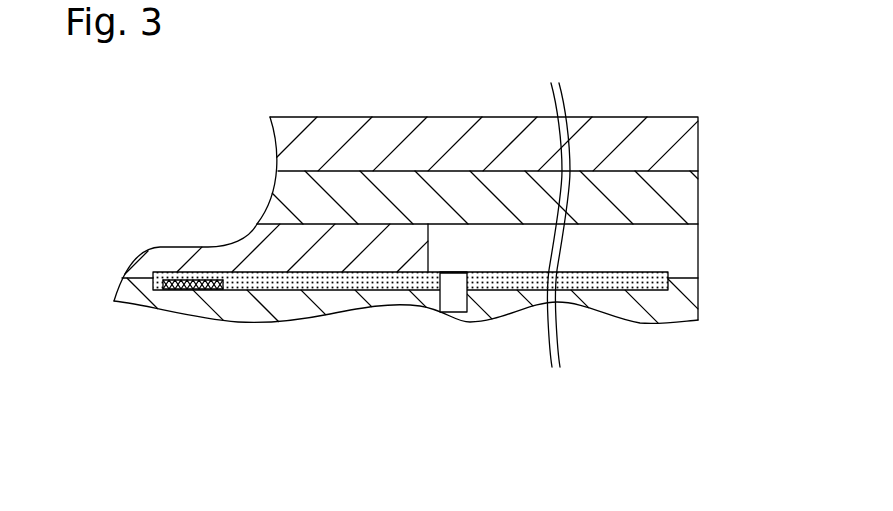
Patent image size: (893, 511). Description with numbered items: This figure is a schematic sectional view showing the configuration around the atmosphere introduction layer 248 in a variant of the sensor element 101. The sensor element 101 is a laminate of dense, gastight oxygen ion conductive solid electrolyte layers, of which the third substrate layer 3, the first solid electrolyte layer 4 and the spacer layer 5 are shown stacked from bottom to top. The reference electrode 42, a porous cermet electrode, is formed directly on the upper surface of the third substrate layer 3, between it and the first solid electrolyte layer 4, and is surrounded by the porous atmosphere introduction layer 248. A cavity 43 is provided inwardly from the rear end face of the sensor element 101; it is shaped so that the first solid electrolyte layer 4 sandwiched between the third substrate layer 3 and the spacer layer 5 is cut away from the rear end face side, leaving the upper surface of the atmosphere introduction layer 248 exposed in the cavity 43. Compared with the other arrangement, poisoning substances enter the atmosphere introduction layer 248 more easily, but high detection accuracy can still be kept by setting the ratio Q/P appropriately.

The sensor element 101 is at (683, 94).
The spacer layer 5 is at (693, 175).
The first solid electrolyte layer 4 is at (238, 245).
The cavity 43 is at (693, 252).
The third substrate layer 3 is at (693, 290).
The atmosphere introduction layer 248 is at (668, 276).
The reference electrode 42 is at (222, 272).